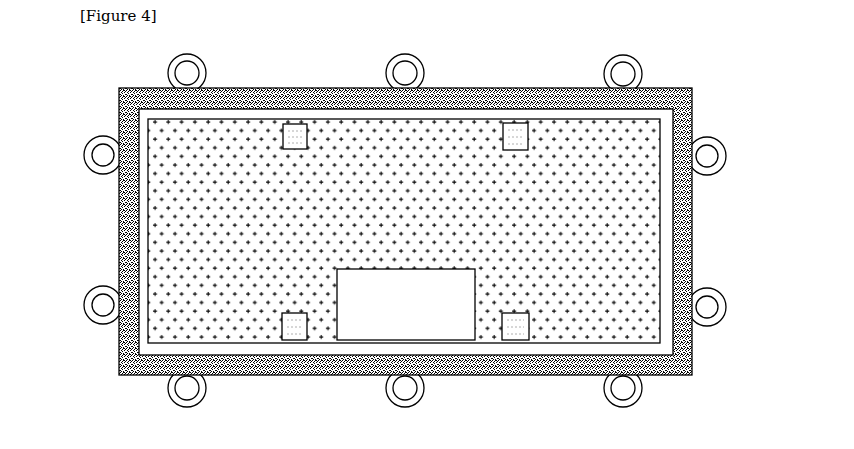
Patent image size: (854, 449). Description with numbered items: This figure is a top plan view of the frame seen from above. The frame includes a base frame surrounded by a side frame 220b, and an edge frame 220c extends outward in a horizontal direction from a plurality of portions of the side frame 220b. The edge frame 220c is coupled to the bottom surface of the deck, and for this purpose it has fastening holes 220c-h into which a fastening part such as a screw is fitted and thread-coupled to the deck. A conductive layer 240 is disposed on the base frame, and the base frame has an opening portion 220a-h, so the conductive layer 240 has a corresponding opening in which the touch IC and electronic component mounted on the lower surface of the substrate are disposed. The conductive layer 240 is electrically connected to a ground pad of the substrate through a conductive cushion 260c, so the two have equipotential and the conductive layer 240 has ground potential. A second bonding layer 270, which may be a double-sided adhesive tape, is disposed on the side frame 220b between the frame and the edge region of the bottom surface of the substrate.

The edge frame 220c is at (709, 137).
The fastening hole 220c-h is at (707, 150).
The second bonding layer 270 is at (692, 210).
The side frame 220b is at (667, 235).
The conductive layer 240 is at (650, 265).
The opening portion 220a-h is at (458, 319).
The conductive cushion 260c is at (520, 330).